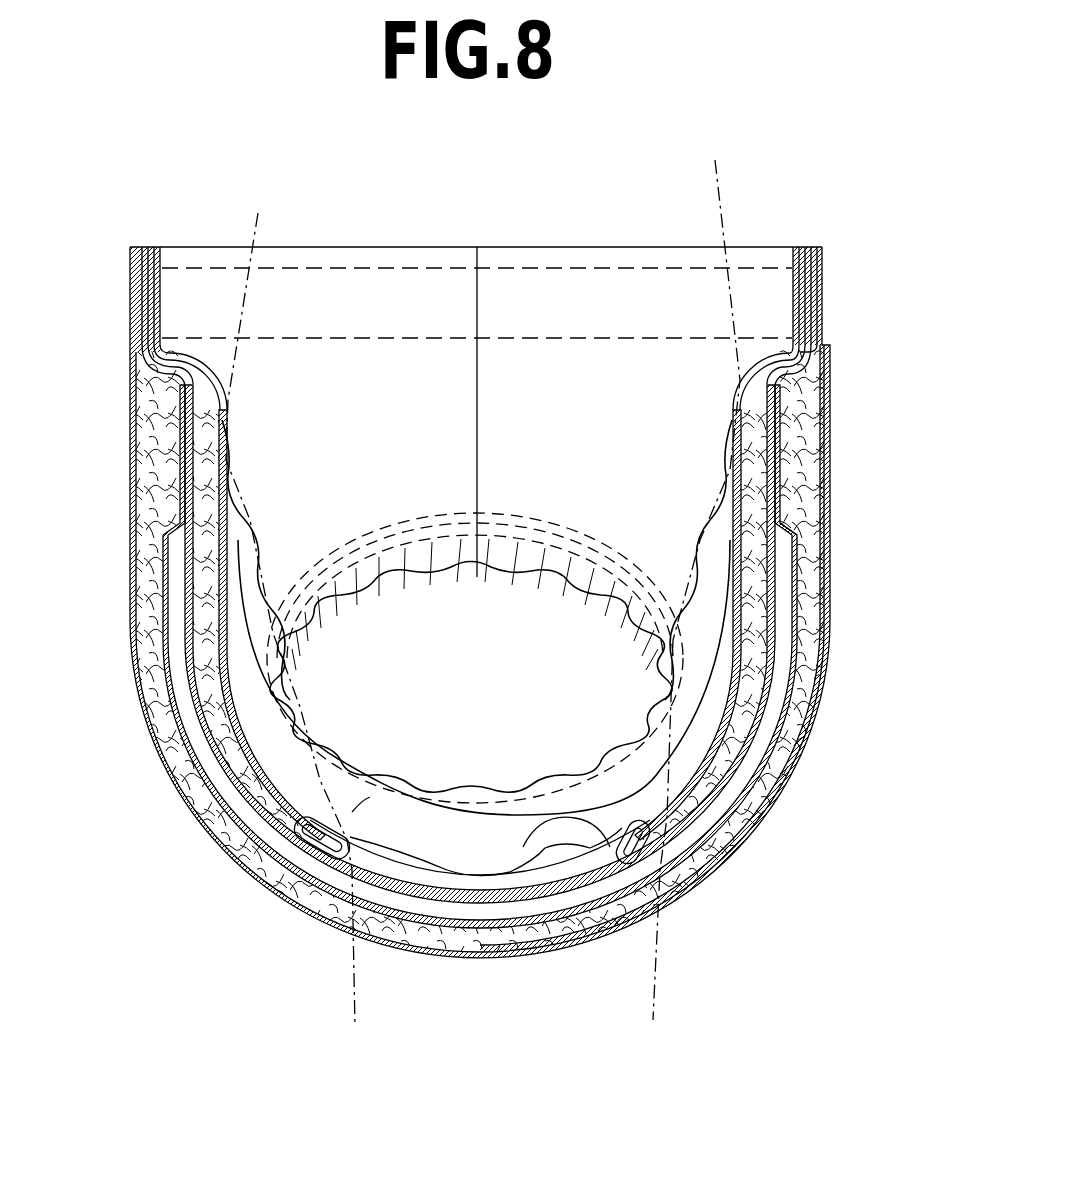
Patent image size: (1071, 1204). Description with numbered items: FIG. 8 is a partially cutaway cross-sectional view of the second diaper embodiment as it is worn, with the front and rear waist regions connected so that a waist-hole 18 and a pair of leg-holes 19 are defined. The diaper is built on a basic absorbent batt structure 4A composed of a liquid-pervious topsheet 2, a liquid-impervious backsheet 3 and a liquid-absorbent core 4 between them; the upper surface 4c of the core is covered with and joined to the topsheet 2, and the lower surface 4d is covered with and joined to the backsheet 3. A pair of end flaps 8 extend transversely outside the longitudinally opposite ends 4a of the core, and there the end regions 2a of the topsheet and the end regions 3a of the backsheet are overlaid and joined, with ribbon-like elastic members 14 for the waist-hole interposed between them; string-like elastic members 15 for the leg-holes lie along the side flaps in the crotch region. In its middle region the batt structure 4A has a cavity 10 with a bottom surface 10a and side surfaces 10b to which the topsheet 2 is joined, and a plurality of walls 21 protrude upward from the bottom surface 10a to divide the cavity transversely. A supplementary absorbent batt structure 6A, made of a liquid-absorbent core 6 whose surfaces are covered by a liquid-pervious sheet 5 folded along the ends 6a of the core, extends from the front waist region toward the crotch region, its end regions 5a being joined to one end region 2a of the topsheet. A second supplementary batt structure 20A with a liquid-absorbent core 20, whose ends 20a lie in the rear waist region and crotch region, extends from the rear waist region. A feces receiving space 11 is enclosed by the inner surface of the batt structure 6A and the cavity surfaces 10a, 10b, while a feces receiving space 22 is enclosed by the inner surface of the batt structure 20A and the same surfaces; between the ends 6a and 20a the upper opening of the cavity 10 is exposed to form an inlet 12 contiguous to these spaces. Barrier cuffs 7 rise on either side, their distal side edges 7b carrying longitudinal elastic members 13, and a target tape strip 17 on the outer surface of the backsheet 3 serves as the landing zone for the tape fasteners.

The liquid-pervious topsheet 2 is at (419, 948).
The end regions of the topsheet 2a is at (138, 272).
The liquid-impervious backsheet 3 is at (455, 955).
The end regions of the backsheet 3a is at (135, 302).
The liquid-absorbent core 4 is at (516, 940).
The basic absorbent batt structure 4A is at (690, 893).
The longitudinally opposite ends of the core 4a is at (150, 380).
The upper surface of the core 4c is at (772, 470).
The lower surface of the core 4d is at (820, 515).
The liquid-pervious sheet 5 is at (230, 525).
The end regions of the liquid-pervious sheet 5a is at (165, 268).
The liquid-absorbent core 6 is at (683, 758).
The supplementary absorbent batt structure 6A is at (770, 586).
The longitudinally opposite ends of the core 6a is at (742, 385).
The barrier cuffs 7 is at (550, 778).
The distal side edges 7b is at (503, 792).
The end flaps 8 is at (598, 262).
The cavity 10 is at (172, 563).
The bottom surface of the cavity 10a is at (205, 757).
The side surfaces of the cavity 10b is at (180, 688).
The feces receiving space 11 is at (766, 792).
The inlet 12 is at (455, 915).
The elastic members 13 is at (395, 785).
The ribbon-like elastic members 14 is at (398, 290).
The string-like elastic members 15 is at (365, 535).
The target tape strip 17 is at (830, 437).
The waist-hole 18 is at (450, 356).
The leg-holes 19 is at (552, 578).
The liquid-absorbent core 20 is at (284, 695).
The longitudinally opposite ends of the core 20a is at (226, 385).
The second supplementary batt structure 20A is at (282, 834).
The walls 21 is at (588, 915).
The feces receiving space 22 is at (178, 605).